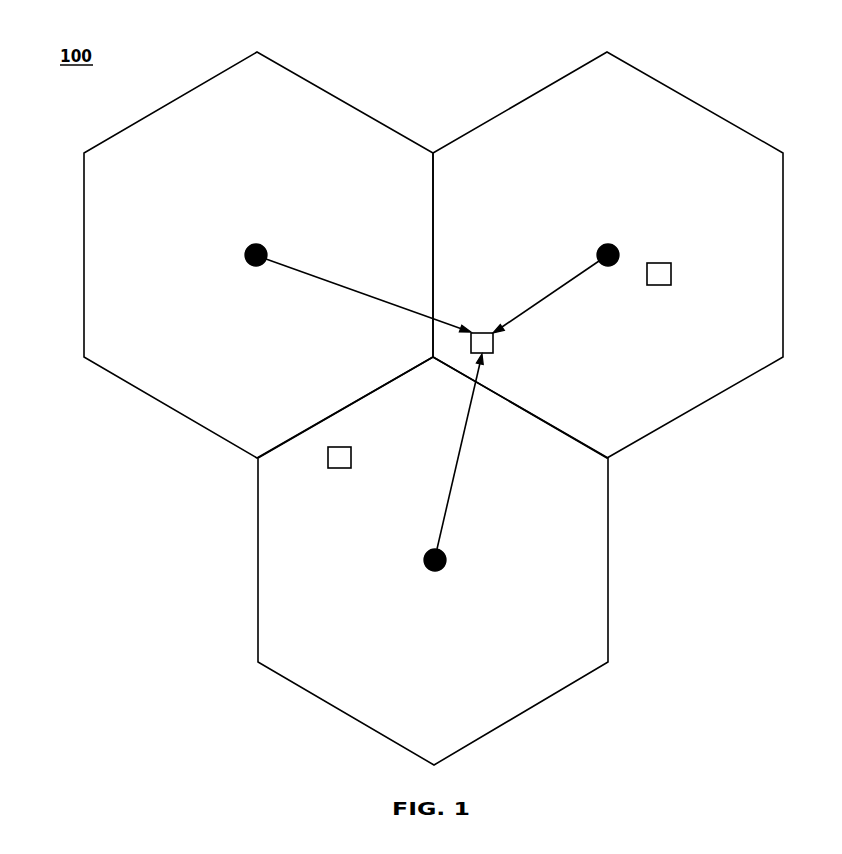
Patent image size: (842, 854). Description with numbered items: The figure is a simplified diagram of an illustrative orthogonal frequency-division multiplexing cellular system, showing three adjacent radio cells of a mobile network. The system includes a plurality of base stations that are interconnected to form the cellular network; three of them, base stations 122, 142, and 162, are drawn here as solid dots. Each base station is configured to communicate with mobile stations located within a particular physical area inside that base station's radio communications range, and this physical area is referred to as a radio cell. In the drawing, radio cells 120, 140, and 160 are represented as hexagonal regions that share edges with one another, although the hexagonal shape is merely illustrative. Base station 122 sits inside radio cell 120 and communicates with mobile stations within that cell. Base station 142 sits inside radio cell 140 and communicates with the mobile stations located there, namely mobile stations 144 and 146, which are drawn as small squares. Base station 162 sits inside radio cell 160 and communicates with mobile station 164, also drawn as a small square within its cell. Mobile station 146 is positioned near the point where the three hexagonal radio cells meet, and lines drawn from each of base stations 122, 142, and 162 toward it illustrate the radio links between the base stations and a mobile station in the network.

The radio cell 120 is at (341, 93).
The base station 122 is at (250, 244).
The radio cell 140 is at (688, 95).
The base station 142 is at (600, 244).
The mobile station 144 is at (660, 263).
The mobile station 146 is at (495, 340).
The radio cell 160 is at (609, 553).
The base station 162 is at (426, 568).
The mobile station 164 is at (340, 447).